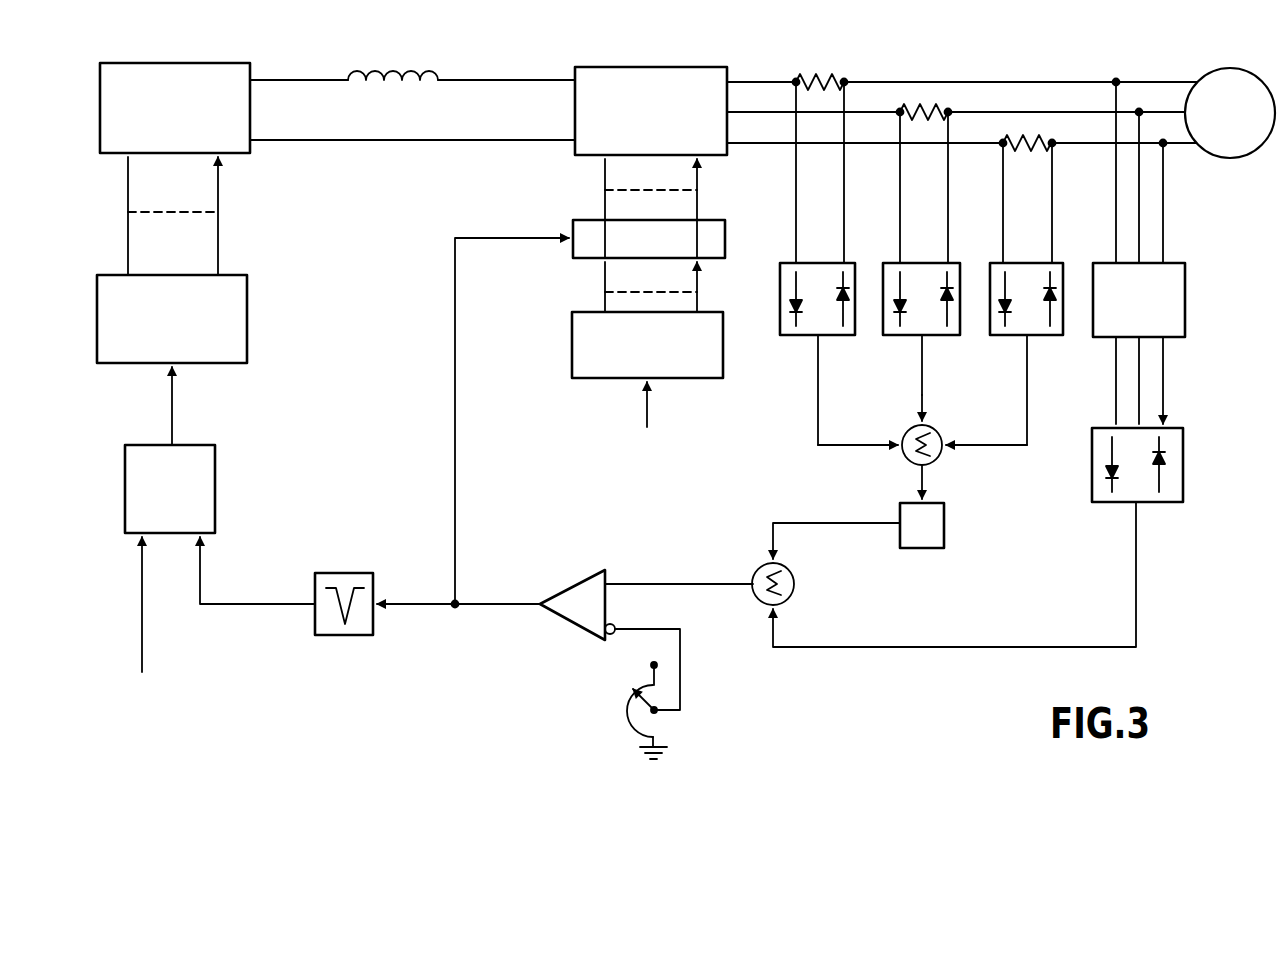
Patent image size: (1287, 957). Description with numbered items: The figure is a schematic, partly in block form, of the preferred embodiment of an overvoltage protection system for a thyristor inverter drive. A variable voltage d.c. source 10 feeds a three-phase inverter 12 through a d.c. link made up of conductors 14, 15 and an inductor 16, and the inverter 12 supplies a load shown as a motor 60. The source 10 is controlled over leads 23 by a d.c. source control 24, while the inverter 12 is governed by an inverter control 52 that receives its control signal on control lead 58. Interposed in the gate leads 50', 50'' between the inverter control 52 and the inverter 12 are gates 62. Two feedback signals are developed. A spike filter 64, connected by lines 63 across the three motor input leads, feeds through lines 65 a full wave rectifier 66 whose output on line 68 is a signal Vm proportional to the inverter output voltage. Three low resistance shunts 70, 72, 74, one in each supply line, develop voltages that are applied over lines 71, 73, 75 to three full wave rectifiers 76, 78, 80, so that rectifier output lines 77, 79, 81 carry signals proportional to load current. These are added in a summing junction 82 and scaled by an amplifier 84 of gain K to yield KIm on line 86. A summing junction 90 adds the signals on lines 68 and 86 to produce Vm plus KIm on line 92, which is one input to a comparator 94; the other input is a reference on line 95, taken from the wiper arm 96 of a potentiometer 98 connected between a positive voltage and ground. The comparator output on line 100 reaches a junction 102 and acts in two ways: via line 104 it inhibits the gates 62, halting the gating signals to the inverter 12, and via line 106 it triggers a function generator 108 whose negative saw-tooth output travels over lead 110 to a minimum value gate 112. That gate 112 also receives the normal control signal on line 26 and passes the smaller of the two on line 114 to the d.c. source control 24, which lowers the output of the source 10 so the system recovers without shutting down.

The variable voltage d.c. source 10 is at (222, 63).
The three-phase inverter 12 is at (678, 65).
The d.c. link conductor 14 is at (474, 80).
The d.c. link conductor 15 is at (404, 140).
The inductor 16 is at (411, 69).
The leads 23 is at (218, 247).
The d.c. source control 24 is at (247, 322).
The normal control signal line 26 is at (142, 604).
The gate lead 50' is at (676, 287).
The gate lead 50'' is at (680, 208).
The inverter control 52 is at (572, 331).
The control lead 58 is at (647, 408).
The motor 60 is at (1232, 69).
The gates 62 is at (725, 237).
The motor voltage sensing lines 63 is at (1112, 196).
The spike filter 64 is at (1185, 285).
The lines 65 is at (1112, 374).
The full wave rectifier 66 is at (1183, 448).
The line 68 is at (952, 648).
The low resistance shunt 70 is at (819, 70).
The line 71 is at (797, 198).
The low resistance shunt 72 is at (950, 107).
The line 73 is at (901, 202).
The low resistance shunt 74 is at (1052, 139).
The line 75 is at (1004, 204).
The full wave rectifier 76 is at (845, 338).
The rectifier output line 77 is at (840, 442).
The full wave rectifier 78 is at (950, 338).
The rectifier output line 79 is at (926, 402).
The full wave rectifier 80 is at (1050, 338).
The rectifier output line 81 is at (990, 447).
The summing junction 82 is at (905, 462).
The amplifier 84 is at (945, 538).
The line 86 is at (822, 522).
The summing junction 90 is at (795, 590).
The line 92 is at (682, 585).
The comparator 94 is at (562, 628).
The reference signal line 95 is at (682, 672).
The wiper arm 96 is at (657, 712).
The potentiometer 98 is at (640, 736).
The line 100 is at (490, 604).
The junction 102 is at (453, 602).
The line 104 is at (455, 371).
The line 106 is at (440, 607).
The function generator 108 is at (338, 572).
The lead 110 is at (244, 603).
The minimum value gate 112 is at (215, 470).
The line 114 is at (172, 420).